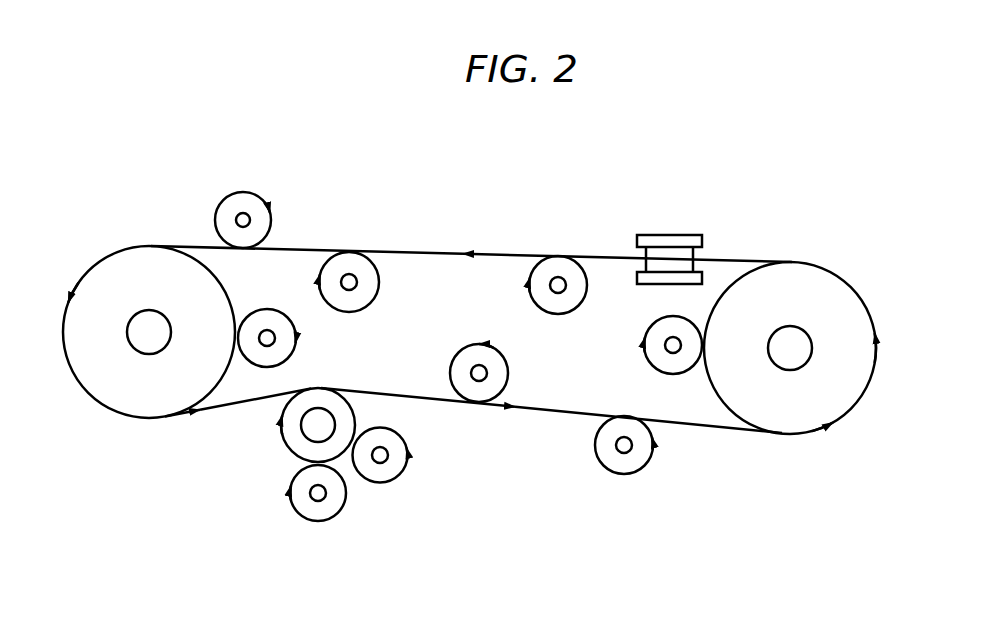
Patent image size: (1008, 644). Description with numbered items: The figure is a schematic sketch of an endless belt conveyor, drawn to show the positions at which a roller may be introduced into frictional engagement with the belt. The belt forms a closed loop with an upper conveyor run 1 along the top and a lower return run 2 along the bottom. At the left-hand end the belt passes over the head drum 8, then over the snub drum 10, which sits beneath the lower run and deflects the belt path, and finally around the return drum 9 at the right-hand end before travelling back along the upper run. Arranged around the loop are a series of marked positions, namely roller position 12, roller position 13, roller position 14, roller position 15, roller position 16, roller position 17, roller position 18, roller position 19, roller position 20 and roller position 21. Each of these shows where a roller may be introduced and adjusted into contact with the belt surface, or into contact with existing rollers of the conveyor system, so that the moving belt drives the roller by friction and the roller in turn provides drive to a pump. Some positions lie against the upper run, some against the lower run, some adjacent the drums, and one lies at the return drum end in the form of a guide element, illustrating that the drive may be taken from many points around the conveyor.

The upper conveyor run 1 is at (505, 247).
The lower return run 2 is at (553, 418).
The head drum 8 is at (107, 377).
The return drum 9 is at (852, 368).
The snub drum 10 is at (295, 427).
The roller position 12 is at (550, 280).
The roller position 13 is at (352, 272).
The roller position 14 is at (225, 217).
The roller position 15 is at (263, 373).
The roller position 16 is at (335, 488).
The roller position 17 is at (395, 458).
The roller position 18 is at (490, 385).
The roller position 19 is at (625, 452).
The roller position 20 is at (675, 353).
The roller position 21 is at (675, 228).